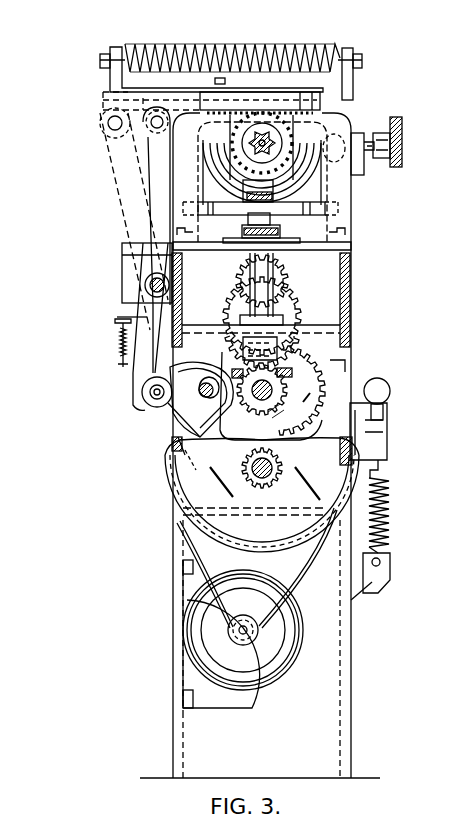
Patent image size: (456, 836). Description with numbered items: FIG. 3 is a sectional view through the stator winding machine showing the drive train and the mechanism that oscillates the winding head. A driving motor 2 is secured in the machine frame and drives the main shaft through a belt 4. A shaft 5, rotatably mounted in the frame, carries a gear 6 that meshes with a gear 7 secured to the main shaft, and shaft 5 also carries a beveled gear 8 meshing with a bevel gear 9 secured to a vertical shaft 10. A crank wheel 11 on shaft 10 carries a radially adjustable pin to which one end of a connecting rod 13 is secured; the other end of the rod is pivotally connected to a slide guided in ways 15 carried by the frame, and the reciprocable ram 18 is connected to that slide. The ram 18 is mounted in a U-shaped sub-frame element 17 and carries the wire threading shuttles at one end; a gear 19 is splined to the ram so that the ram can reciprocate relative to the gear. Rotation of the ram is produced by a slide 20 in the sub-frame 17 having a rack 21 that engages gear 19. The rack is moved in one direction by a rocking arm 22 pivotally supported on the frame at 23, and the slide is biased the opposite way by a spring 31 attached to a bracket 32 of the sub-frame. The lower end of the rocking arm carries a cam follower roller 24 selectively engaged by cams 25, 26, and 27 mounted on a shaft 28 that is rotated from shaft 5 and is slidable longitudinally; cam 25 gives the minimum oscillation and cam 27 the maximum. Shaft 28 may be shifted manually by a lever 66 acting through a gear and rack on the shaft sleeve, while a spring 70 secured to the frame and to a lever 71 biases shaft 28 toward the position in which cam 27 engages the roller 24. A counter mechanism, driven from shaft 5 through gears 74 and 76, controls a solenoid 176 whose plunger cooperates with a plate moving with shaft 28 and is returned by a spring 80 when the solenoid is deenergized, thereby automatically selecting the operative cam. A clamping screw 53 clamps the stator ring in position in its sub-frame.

The driving motor 2 is at (193, 637).
The belt 4 is at (293, 583).
The shaft 5 is at (271, 396).
The gear 6 is at (302, 383).
The gear 7 is at (272, 485).
The beveled gear 8 is at (134, 123).
The bevel gear 9 is at (342, 362).
The vertical shaft 10 is at (268, 220).
The crank wheel 11 is at (235, 213).
The connecting rod 13 is at (273, 193).
The way 15 is at (262, 495).
The U-shaped sub-frame element 17 is at (346, 228).
The reciprocating ram 18 is at (250, 140).
The gear 19 is at (334, 148).
The slide 20 is at (103, 105).
The rack 21 is at (343, 115).
The rocking arm 22 is at (150, 176).
The pivot 23 is at (145, 283).
The cam follower roller 24 is at (145, 410).
The cam 25 is at (143, 470).
The cam 26 is at (166, 428).
The cam 27 is at (180, 423).
The shaft 28 is at (210, 383).
The spring 31 is at (247, 43).
The bracket 32 is at (112, 78).
The clamping screw 53 is at (396, 168).
The lever 66 is at (388, 400).
The spring 70 is at (388, 503).
The lever 71 is at (382, 446).
The gear 74 is at (281, 272).
The gear 76 is at (288, 312).
The plunger return spring 80 is at (117, 342).
The solenoid 176 is at (120, 262).